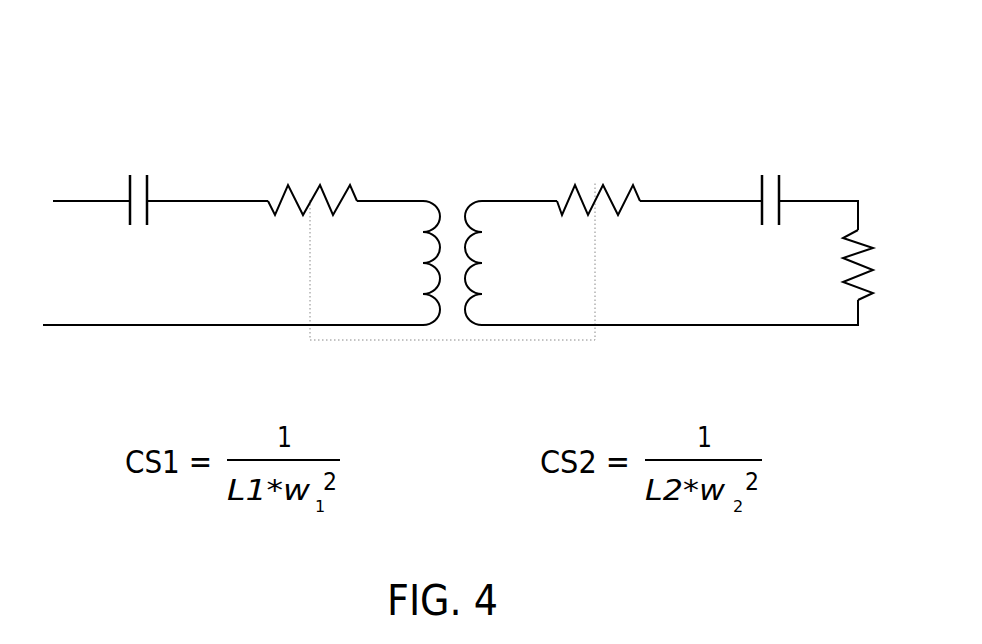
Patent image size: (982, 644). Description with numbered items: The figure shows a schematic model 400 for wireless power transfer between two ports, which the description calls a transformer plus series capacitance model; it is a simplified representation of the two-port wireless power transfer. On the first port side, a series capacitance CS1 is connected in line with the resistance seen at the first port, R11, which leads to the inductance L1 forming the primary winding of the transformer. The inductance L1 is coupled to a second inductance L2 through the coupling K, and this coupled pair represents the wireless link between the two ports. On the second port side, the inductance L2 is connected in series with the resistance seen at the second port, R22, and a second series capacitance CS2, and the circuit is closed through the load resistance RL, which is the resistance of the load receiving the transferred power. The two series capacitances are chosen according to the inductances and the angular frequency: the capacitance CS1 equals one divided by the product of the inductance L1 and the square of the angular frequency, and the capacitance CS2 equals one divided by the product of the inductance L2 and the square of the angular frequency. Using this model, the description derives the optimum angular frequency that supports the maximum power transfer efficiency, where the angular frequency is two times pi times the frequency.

The schematic model 400 is at (798, 81).
The series capacitance CS1 is at (140, 182).
The resistance seen at Port 1 R11 is at (312, 181).
The inductance L1 is at (408, 263).
The coupling K is at (451, 231).
The inductance L2 is at (493, 263).
The resistance seen at Port 2 R22 is at (598, 181).
The series capacitance CS2 is at (777, 184).
The load resistance RL is at (886, 265).